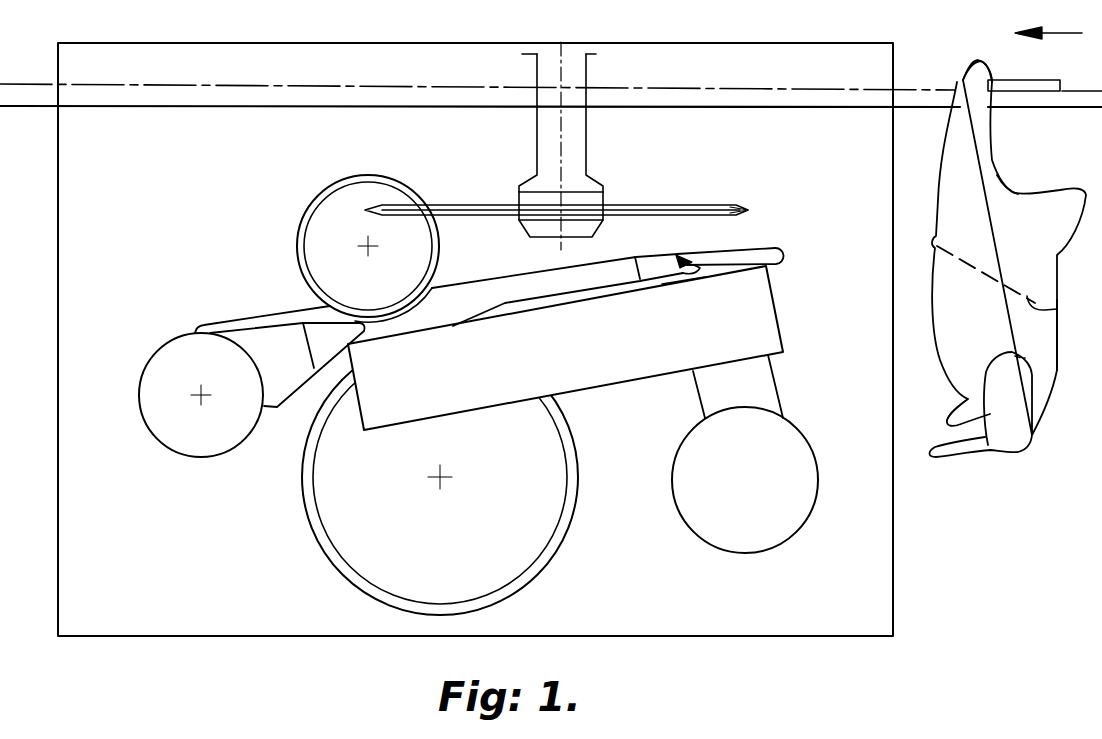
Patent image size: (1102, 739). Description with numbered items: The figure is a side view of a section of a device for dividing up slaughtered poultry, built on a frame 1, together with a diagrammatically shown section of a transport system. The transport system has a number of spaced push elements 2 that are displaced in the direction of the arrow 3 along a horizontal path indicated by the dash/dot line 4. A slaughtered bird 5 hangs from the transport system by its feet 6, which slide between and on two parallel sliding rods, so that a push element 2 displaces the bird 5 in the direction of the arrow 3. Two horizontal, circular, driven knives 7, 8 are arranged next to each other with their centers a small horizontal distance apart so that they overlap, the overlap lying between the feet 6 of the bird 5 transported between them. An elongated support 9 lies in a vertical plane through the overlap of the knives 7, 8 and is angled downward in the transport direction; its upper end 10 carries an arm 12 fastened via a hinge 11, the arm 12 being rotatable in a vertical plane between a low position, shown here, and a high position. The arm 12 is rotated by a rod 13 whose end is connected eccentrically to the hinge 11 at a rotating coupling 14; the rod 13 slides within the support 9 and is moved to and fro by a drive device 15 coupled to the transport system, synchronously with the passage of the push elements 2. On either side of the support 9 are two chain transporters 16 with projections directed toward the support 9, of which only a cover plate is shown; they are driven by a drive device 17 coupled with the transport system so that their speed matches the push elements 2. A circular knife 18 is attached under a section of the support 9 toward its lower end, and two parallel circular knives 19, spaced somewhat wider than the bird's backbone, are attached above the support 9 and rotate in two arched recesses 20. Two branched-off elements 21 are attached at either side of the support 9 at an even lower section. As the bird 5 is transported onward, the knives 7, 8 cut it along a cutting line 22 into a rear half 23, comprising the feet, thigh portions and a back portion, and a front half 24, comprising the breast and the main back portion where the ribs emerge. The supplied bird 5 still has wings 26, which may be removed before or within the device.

The frame 1 is at (130, 627).
The push element 2 is at (1040, 83).
The arrow 3 is at (1058, 33).
The dash/dot line 4 is at (185, 84).
The slaughtered bird 5 is at (1061, 281).
The feet 6 is at (978, 74).
The knife 7 is at (713, 206).
The knife 8 is at (746, 214).
The elongated support 9 is at (463, 290).
The upper end 10 is at (643, 266).
The hinge 11 is at (683, 260).
The arm 12 is at (760, 258).
The rod 13 is at (672, 283).
The rotating coupling 14 is at (686, 281).
The drive device 15 is at (152, 405).
The chain transporter 16 is at (598, 385).
The drive device 17 is at (770, 528).
The knife 18 is at (545, 540).
The knife 19 is at (358, 186).
The arched recess 20 is at (400, 314).
The branched-off element 21 is at (273, 324).
The cutting line 22 is at (1060, 308).
The rear half 23 is at (1014, 196).
The front half 24 is at (1040, 349).
The wings 26 is at (968, 413).